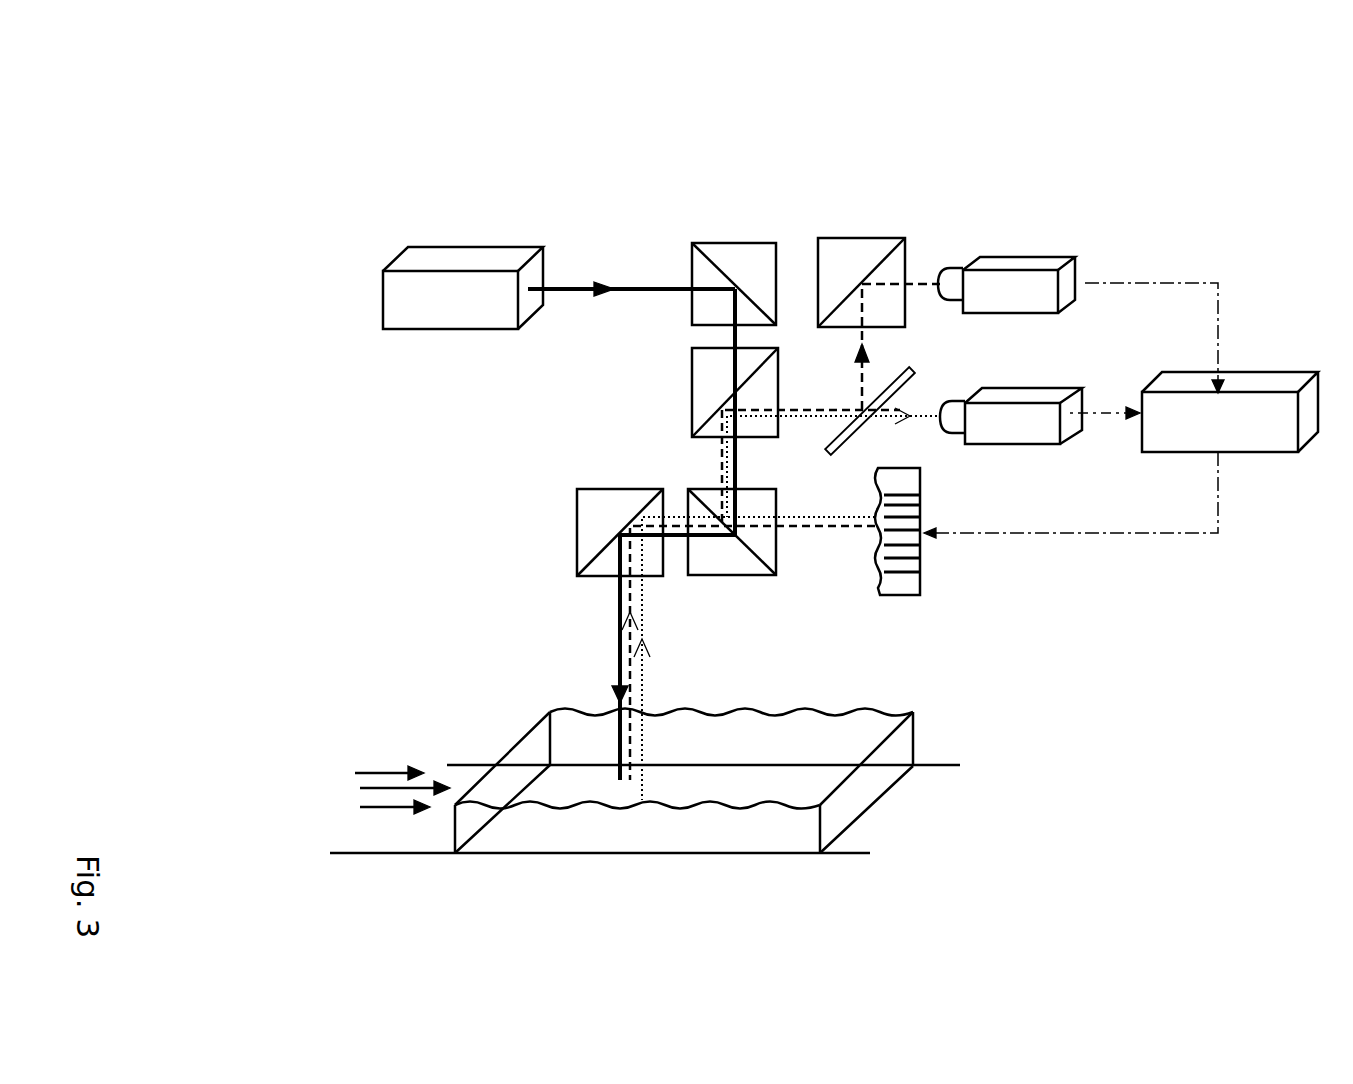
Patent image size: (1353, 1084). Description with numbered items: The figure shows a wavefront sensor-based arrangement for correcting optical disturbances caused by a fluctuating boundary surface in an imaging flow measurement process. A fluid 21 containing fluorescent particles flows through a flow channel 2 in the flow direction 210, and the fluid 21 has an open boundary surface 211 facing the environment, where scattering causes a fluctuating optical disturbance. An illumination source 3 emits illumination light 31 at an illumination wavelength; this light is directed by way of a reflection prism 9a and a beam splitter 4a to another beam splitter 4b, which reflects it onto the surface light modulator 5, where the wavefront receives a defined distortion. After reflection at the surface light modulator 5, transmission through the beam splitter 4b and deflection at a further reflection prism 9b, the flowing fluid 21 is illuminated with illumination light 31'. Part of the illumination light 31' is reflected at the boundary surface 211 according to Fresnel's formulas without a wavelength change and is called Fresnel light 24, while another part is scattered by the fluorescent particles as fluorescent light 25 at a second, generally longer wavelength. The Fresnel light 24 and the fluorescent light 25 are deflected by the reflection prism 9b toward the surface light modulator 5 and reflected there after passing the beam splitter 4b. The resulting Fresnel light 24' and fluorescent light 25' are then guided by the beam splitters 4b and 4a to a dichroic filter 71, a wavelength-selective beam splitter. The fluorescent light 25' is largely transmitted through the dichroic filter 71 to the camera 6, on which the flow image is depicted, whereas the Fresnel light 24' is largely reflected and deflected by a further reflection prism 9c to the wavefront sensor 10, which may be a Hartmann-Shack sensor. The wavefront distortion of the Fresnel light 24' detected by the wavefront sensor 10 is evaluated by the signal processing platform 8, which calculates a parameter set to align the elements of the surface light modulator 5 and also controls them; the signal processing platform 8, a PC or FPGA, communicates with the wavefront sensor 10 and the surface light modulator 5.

The flow channel 2 is at (875, 853).
The fluid 21 is at (905, 742).
The boundary surface 211 is at (560, 712).
The flow direction 210 is at (355, 790).
The illumination source 3 is at (383, 298).
The illumination light 31 is at (620, 200).
The illumination light with distorted wavefront 31' is at (575, 534).
The beam splitter 4a is at (690, 373).
The beam splitter 4b is at (688, 489).
The surface light modulator 5 is at (920, 558).
The camera 6 is at (1060, 444).
The dichroic filter 71 is at (915, 370).
The signal processing platform 8 is at (1300, 372).
The reflection prism 9a is at (727, 243).
The reflection prism 9b is at (577, 537).
The reflection prism 9c is at (868, 238).
The wavefront sensor 10 is at (450, 188).
The Fresnel light 24 is at (748, 653).
The Fresnel light after modulator reflection 24' is at (911, 258).
The fluorescent light 25 is at (754, 658).
The fluorescent light after modulator reflection 25' is at (926, 510).